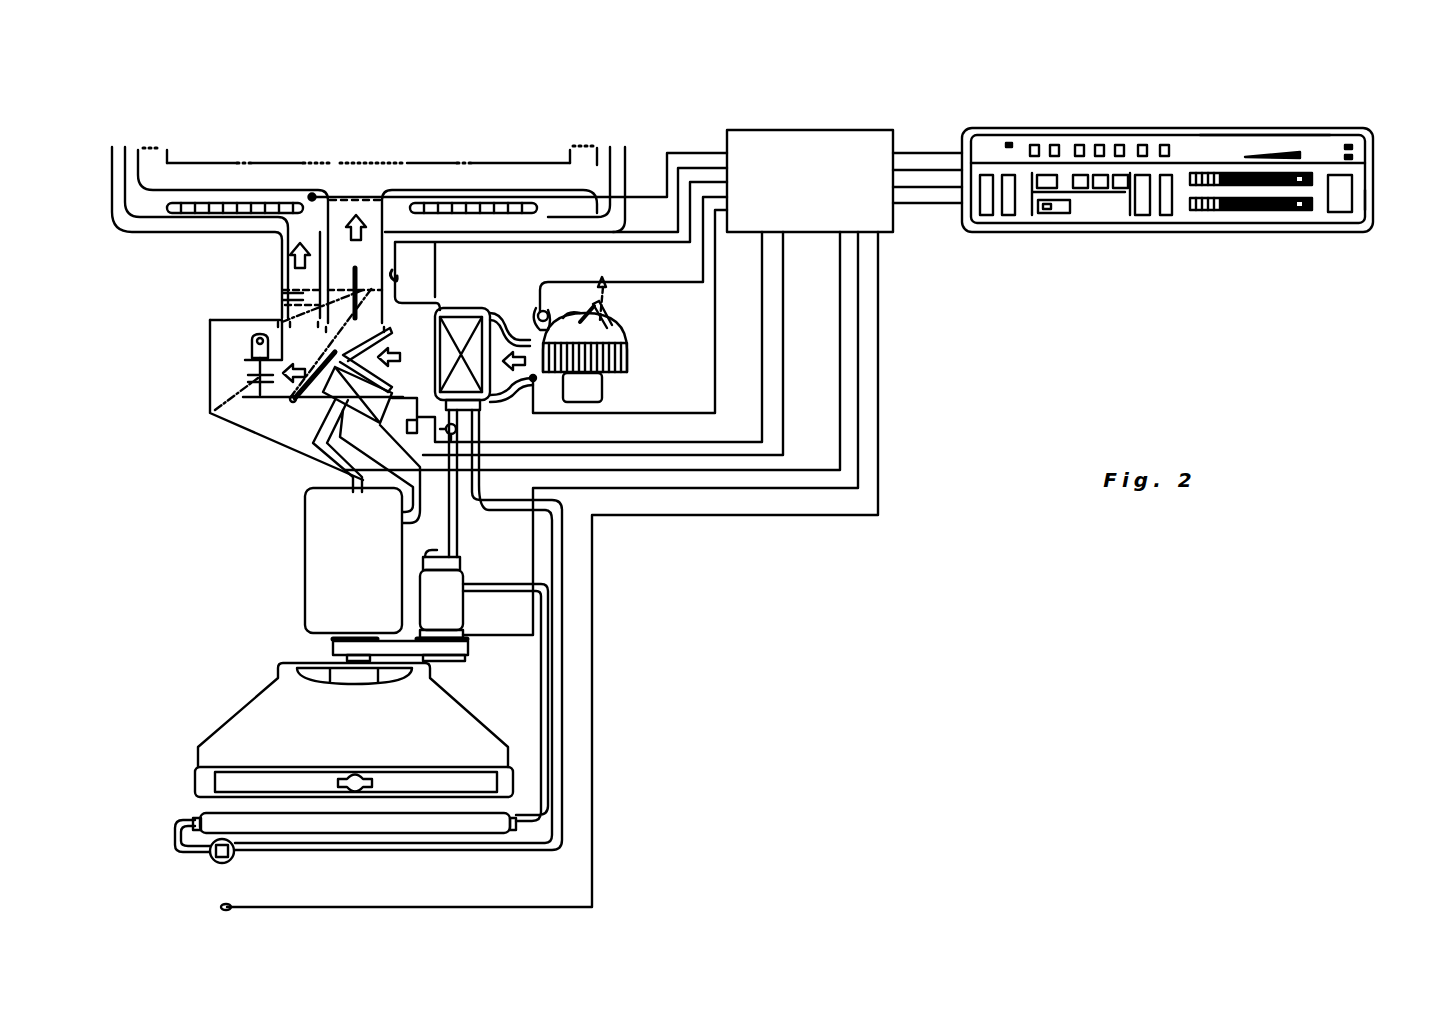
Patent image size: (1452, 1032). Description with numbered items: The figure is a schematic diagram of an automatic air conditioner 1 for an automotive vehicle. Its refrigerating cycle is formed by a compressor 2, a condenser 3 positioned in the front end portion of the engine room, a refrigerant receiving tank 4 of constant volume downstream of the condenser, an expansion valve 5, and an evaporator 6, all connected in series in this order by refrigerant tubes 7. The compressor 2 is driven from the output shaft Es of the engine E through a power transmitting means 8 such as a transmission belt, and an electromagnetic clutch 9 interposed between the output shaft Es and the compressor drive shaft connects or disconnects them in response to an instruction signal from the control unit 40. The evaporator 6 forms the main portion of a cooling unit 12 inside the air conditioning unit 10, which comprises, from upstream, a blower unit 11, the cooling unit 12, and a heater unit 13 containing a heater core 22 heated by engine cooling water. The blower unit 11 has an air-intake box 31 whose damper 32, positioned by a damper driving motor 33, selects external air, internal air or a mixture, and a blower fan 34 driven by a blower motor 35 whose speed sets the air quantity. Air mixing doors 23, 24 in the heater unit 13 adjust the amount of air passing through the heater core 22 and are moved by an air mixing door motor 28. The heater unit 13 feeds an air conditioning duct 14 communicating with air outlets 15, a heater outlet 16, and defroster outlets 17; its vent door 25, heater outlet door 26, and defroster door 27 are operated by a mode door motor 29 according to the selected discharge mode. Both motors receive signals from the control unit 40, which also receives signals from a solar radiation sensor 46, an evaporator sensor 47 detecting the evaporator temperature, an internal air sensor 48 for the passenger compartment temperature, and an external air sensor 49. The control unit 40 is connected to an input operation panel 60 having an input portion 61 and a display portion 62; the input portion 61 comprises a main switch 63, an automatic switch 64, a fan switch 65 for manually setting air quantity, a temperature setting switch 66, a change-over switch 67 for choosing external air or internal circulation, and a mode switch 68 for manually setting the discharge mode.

The air conditioner 1 is at (662, 603).
The compressor 2 is at (467, 567).
The condenser 3 is at (195, 818).
The refrigerant receiving tank 4 is at (213, 862).
The expansion valve 5 is at (456, 430).
The evaporator 6 is at (490, 395).
The refrigerant tubes 7 is at (565, 713).
The power transmitting means 8 is at (445, 655).
The electromagnetic clutch 9 is at (465, 632).
The air conditioning unit 10 is at (232, 433).
The blower unit 11 is at (630, 337).
The cooling unit 12 is at (477, 300).
The heater unit 13 is at (315, 418).
The air conditioning duct 14 is at (318, 331).
The air outlets 15 is at (150, 148).
The heater outlet 16 is at (243, 366).
The defroster outlets 17 is at (121, 143).
The heater core 22 is at (375, 422).
The air mixing door 23 is at (392, 331).
The air mixing door 24 is at (293, 402).
The vent door 25 is at (338, 351).
The heater outlet door 26 is at (240, 384).
The defroster door 27 is at (293, 300).
The air mixing door motor 28 is at (413, 436).
The mode door motor 29 is at (253, 342).
The air-intake box 31 is at (620, 312).
The damper 32 is at (598, 292).
The damper driving motor 33 is at (540, 300).
The blower fan 34 is at (627, 358).
The blower motor 35 is at (602, 390).
The control unit 40 is at (868, 130).
The solar radiation sensor 46 is at (311, 194).
The evaporator sensor 47 is at (436, 348).
The internal air sensor 48 is at (397, 280).
The external air sensor 49 is at (230, 905).
The input operation panel 60 is at (1135, 128).
The input portion 61 is at (1362, 200).
The display portion 62 is at (1325, 135).
The main switch 63 is at (1342, 213).
The automatic switch 64 is at (1046, 214).
The fan switch 65 is at (1213, 173).
The temperature setting switch 66 is at (1214, 211).
The change-over switch 67 is at (1046, 175).
The mode switch 68 is at (1167, 215).
The engine E is at (305, 606).
The output shaft Es is at (333, 637).